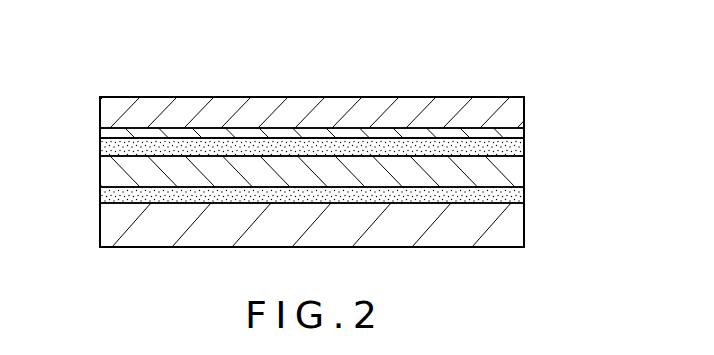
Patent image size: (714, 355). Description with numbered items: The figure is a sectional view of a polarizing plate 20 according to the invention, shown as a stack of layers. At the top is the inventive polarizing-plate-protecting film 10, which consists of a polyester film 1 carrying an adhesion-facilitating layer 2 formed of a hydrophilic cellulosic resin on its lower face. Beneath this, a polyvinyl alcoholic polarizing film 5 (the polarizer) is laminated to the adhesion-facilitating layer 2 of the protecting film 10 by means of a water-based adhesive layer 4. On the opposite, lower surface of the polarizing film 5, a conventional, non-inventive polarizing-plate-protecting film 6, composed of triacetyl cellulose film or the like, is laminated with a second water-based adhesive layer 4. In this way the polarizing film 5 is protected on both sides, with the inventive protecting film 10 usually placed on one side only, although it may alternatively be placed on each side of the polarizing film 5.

The polarizing plate 20 is at (338, 138).
The polarizing-plate-protecting film 10 is at (352, 111).
The polyester film 1 is at (512, 112).
The adhesion-facilitating layer 2 is at (336, 131).
The water-based adhesive layer 4 is at (102, 146).
The polyvinyl alcoholic polarizing film 5 is at (512, 170).
The conventional polarizing-plate-protecting film 6 is at (512, 225).